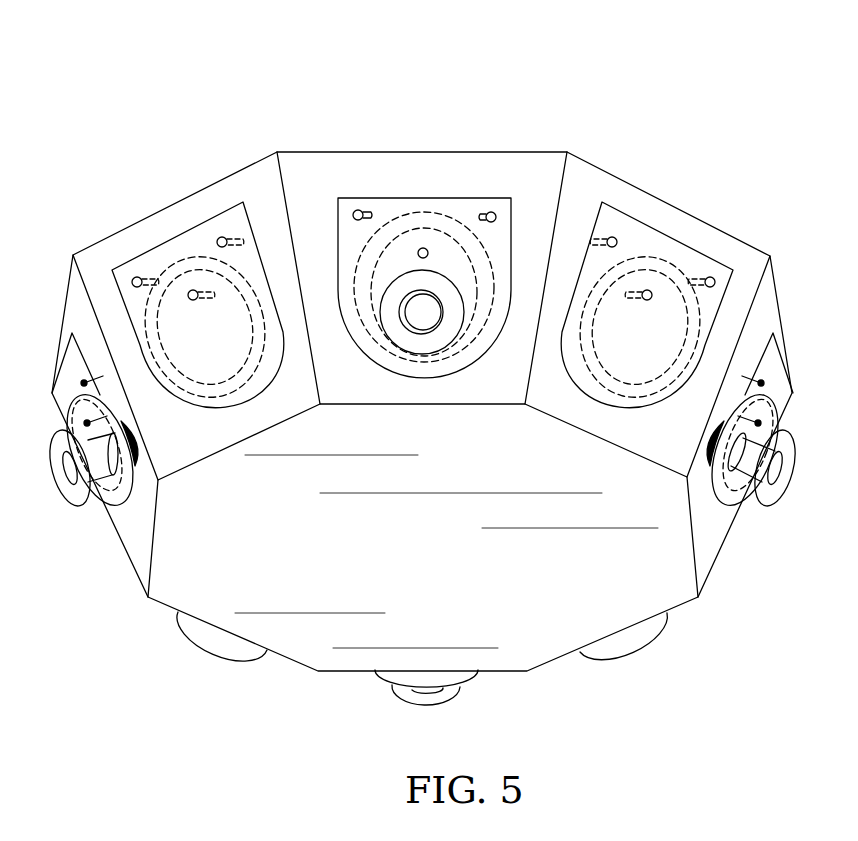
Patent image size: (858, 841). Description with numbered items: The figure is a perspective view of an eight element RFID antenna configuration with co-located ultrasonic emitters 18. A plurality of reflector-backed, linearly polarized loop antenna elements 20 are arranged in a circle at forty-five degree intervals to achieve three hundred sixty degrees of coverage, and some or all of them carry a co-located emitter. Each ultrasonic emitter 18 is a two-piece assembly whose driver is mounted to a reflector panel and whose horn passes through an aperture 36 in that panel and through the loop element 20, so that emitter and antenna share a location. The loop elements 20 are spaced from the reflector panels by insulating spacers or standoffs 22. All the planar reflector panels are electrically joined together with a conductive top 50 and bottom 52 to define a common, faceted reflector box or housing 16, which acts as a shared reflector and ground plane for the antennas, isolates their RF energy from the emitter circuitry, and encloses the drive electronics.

The conductive top 50 is at (589, 77).
The housing 16 is at (313, 167).
The ultrasonic emitter 18 is at (777, 488).
The loop element 20 is at (645, 390).
The standoffs 22 is at (749, 376).
The aperture 36 is at (134, 447).
The bottom 52 is at (500, 661).